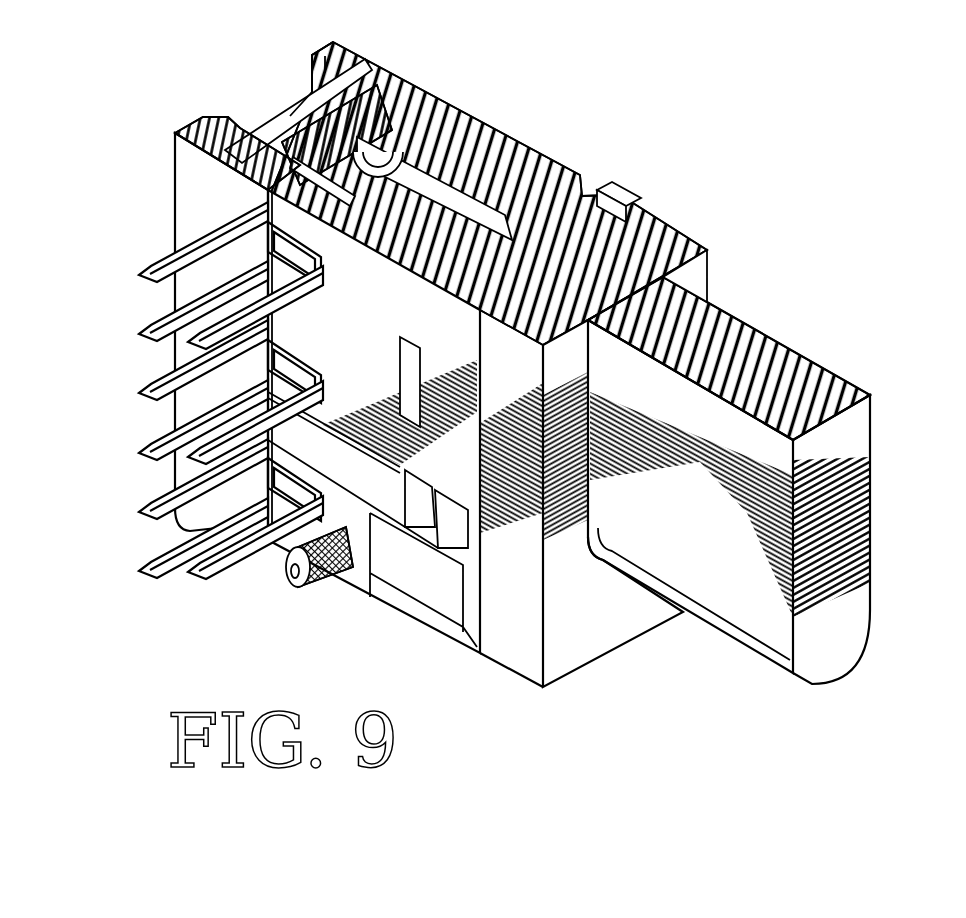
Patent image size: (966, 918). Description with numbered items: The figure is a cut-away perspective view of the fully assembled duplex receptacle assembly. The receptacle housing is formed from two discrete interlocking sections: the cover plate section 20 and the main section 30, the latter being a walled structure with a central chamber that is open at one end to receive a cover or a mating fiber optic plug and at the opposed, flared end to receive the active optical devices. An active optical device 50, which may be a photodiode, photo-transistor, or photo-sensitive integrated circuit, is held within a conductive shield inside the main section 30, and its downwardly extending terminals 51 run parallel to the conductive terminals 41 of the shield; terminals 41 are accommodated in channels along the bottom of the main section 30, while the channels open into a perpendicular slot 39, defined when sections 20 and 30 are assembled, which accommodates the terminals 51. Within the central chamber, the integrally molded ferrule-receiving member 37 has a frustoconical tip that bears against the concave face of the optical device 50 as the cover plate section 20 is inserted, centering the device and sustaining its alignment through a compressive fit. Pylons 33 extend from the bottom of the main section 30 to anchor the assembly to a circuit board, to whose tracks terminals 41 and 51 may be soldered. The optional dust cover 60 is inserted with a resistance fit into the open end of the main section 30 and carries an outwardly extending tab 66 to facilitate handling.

The cover plate section 20 is at (200, 189).
The main section 30 is at (545, 140).
The pylons 33 is at (322, 580).
The ferrule-receiving member 37 is at (470, 150).
The slot 39 is at (242, 160).
The conductive terminals 41 is at (285, 293).
The active optical device 50 is at (388, 110).
The terminals 51 is at (142, 571).
The dust cover 60 is at (815, 355).
The tab 66 is at (871, 588).